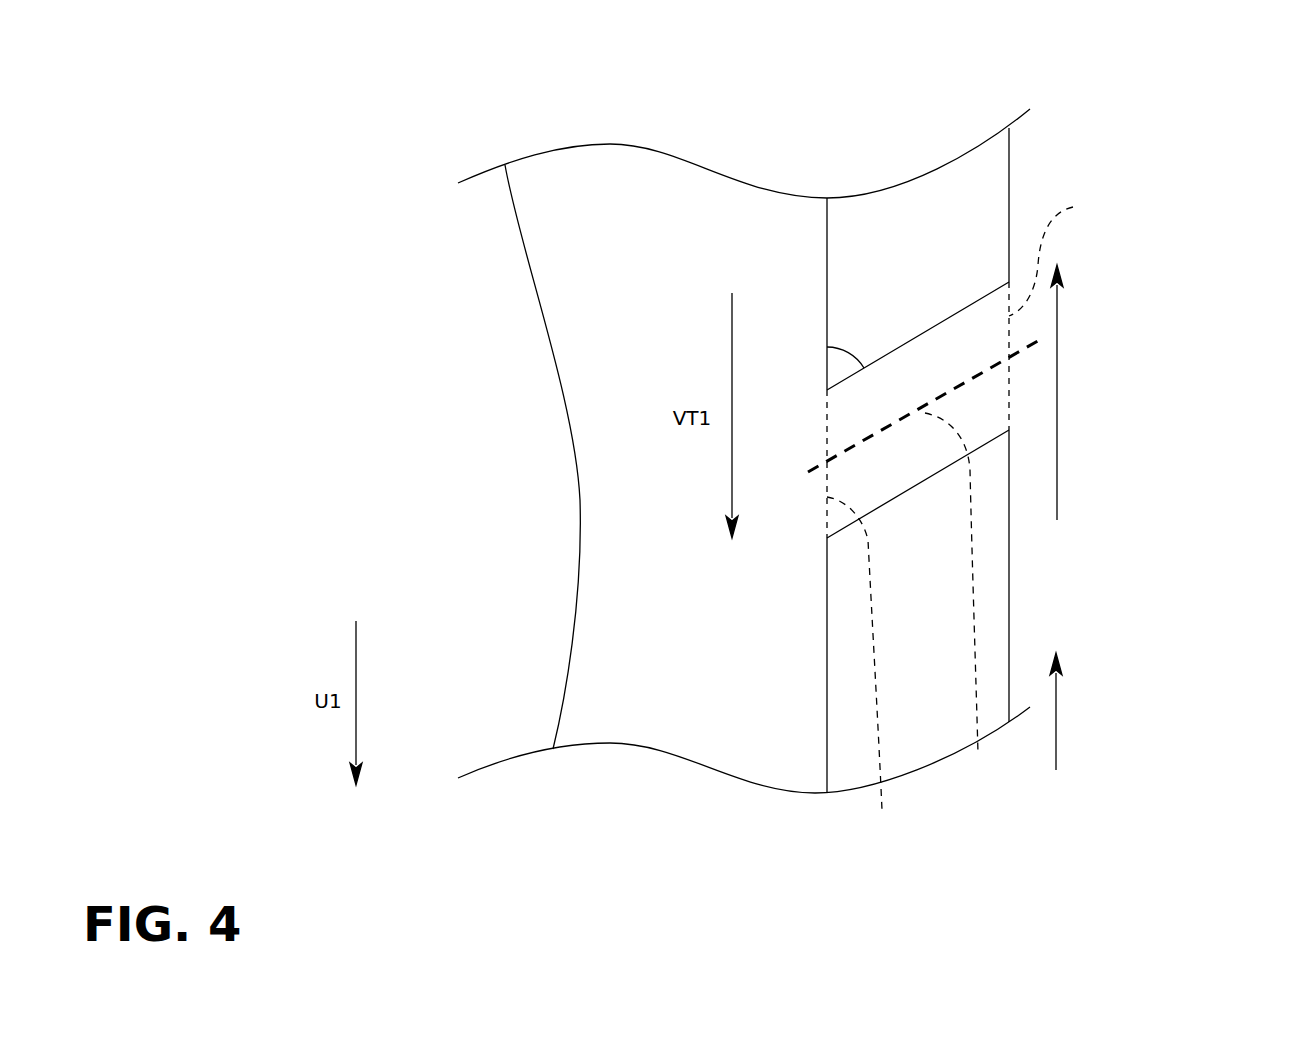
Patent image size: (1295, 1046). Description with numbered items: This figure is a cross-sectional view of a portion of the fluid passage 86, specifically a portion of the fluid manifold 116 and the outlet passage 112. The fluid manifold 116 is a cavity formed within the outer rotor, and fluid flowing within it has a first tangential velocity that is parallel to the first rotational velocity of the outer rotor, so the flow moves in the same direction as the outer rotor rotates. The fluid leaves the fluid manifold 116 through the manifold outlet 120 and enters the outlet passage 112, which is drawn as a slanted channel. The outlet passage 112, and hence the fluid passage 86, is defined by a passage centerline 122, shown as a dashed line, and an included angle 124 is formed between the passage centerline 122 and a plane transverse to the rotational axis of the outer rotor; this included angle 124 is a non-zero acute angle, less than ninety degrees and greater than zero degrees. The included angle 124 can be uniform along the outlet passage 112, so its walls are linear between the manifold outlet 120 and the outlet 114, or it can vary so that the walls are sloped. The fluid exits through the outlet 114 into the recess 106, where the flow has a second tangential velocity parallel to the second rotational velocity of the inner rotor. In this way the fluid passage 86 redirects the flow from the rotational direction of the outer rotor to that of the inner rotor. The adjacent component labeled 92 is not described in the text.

The fluid passage 86 is at (262, 53).
The second blade row 92 is at (1009, 178).
The recess 106 is at (1240, 265).
The outlet passage 112 is at (985, 472).
The outlet 114 is at (1064, 253).
The fluid manifold 116 is at (595, 320).
The manifold outlet 120 is at (865, 668).
The passage centerline 122 is at (962, 599).
The included angle 124 is at (847, 345).